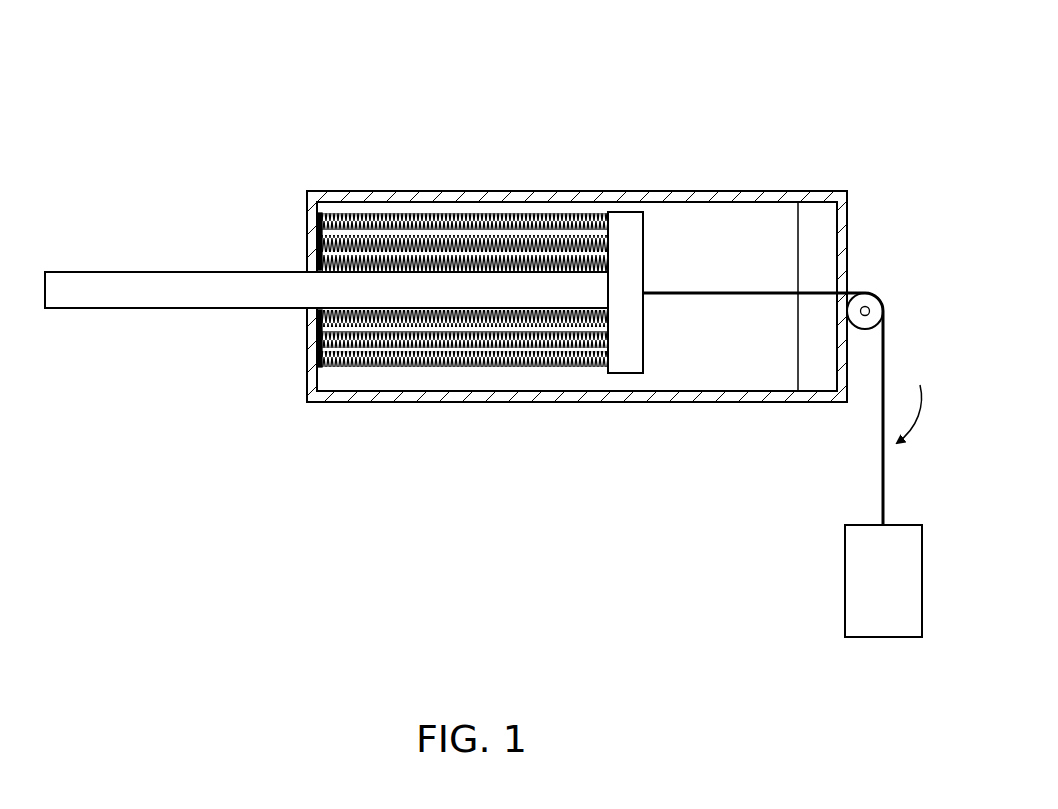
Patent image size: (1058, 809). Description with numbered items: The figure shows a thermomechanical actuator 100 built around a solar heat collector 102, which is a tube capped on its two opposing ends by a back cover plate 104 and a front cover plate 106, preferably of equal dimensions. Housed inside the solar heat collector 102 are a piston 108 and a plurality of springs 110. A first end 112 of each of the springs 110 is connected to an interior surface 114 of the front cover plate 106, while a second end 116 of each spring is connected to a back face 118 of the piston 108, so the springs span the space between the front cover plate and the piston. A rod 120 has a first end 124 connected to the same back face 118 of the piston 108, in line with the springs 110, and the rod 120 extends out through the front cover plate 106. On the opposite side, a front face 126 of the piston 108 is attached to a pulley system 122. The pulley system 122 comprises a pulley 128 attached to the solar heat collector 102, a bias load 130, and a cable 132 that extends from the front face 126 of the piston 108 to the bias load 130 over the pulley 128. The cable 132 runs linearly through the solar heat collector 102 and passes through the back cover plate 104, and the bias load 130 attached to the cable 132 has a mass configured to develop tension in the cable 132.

The thermomechanical actuator 100 is at (163, 61).
The solar heat collector 102 is at (728, 200).
The back cover plate 104 is at (840, 234).
The front cover plate 106 is at (316, 242).
The piston 108 is at (628, 228).
The plurality of springs 110 is at (447, 296).
The first end of spring 112 is at (326, 218).
The interior surface of front cover plate 114 is at (315, 381).
The second end of spring 116 is at (605, 215).
The back face of piston 118 is at (605, 289).
The rod 120 is at (385, 288).
The pulley system 122 is at (920, 398).
The first end of rod 124 is at (565, 295).
The front face of piston 126 is at (645, 353).
The pulley 128 is at (879, 311).
The bias load 130 is at (860, 578).
The cable 132 is at (880, 462).